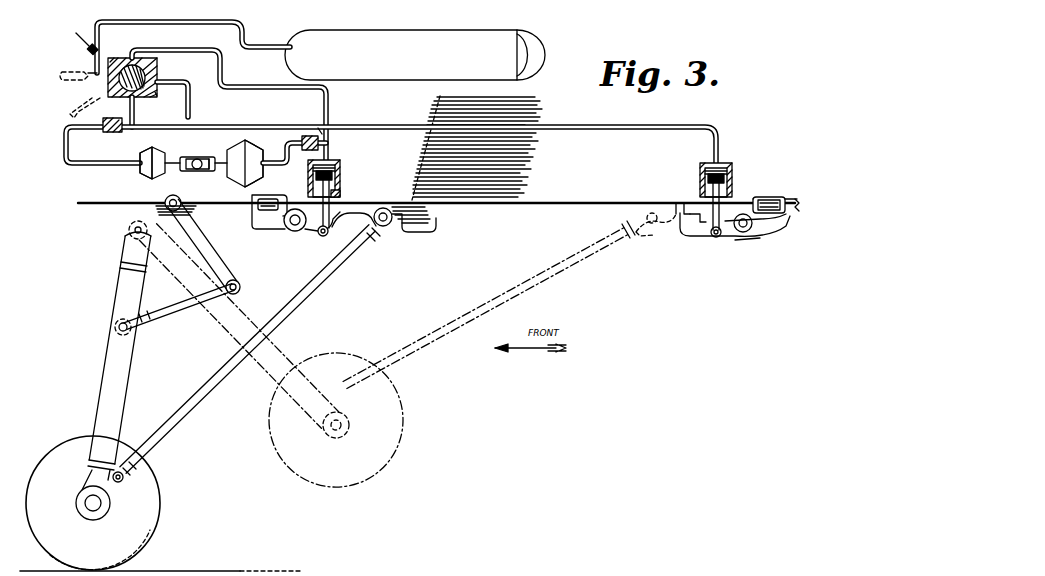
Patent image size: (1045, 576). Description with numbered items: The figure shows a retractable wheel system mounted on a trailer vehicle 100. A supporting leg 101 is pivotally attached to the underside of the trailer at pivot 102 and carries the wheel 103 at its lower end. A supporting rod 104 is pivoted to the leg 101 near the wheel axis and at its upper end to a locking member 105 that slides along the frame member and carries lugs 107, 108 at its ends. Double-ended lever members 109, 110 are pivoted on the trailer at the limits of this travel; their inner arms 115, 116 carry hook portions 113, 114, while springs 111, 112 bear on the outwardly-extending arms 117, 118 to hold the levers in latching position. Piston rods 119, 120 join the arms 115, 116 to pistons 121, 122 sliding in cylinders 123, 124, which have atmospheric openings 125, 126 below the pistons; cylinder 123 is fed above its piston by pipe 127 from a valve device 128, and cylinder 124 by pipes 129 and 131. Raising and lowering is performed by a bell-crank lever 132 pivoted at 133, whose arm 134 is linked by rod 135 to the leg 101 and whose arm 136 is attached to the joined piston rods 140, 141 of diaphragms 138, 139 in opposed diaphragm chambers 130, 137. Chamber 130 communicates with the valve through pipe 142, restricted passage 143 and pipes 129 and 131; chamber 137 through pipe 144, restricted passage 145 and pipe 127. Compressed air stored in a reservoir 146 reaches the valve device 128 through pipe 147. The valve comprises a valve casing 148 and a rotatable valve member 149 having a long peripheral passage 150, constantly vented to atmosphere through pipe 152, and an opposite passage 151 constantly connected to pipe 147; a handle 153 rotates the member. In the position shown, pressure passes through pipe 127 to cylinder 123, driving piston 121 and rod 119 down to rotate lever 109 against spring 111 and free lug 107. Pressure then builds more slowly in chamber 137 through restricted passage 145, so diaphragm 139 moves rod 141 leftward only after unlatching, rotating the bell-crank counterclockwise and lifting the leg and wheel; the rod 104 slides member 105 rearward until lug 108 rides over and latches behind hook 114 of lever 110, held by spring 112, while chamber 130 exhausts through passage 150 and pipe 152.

The trailer vehicle 100 is at (69, 203).
The supporting leg 101 is at (108, 371).
The pivot 102 is at (129, 230).
The wheel 103 is at (158, 514).
The supporting rod 104 is at (278, 325).
The locking member 105 is at (428, 229).
The lug 107 is at (343, 224).
The lug 108 is at (431, 214).
The double-ended lever member 109 is at (295, 226).
The double-ended lever member 110 is at (742, 240).
The spring 111 is at (258, 207).
The spring 112 is at (762, 214).
The hook portion 113 is at (337, 210).
The hook portion 114 is at (688, 198).
The inner arm 115 is at (320, 235).
The inner arm 116 is at (702, 238).
The outwardly-extending arm 117 is at (260, 223).
The outwardly-extending arm 118 is at (750, 232).
The piston rod 119 is at (312, 188).
The piston rod 120 is at (702, 197).
The piston 121 is at (345, 165).
The piston 122 is at (733, 170).
The cylinder 123 is at (337, 163).
The cylinder 124 is at (735, 180).
The atmospheric opening 125 is at (340, 180).
The atmospheric opening 126 is at (735, 192).
The pipe 127 is at (331, 110).
The valve device 128 is at (157, 70).
The pipe 129 is at (548, 128).
The diaphragm chamber 130 is at (140, 170).
The pipe 131 is at (133, 106).
The bell-crank lever 132 is at (166, 199).
The pivot 133 is at (194, 206).
The arm 134 is at (204, 226).
The rod 135 is at (180, 313).
The arm 136 is at (190, 172).
The diaphragm chamber 137 is at (240, 178).
The diaphragm 138 is at (140, 154).
The diaphragm 139 is at (263, 170).
The piston rod 140 is at (182, 160).
The piston rod 141 is at (224, 162).
The pipe 142 is at (66, 140).
The restricted passage 143 is at (115, 132).
The pipe 144 is at (300, 146).
The restricted passage 145 is at (318, 130).
The reservoir 146 is at (433, 75).
The pipe 147 is at (250, 41).
The valve casing 148 is at (157, 95).
The valve member 149 is at (130, 58).
The passage 150 is at (96, 103).
The passage 151 is at (100, 72).
The pipe 152 is at (189, 95).
The handle 153 is at (75, 35).